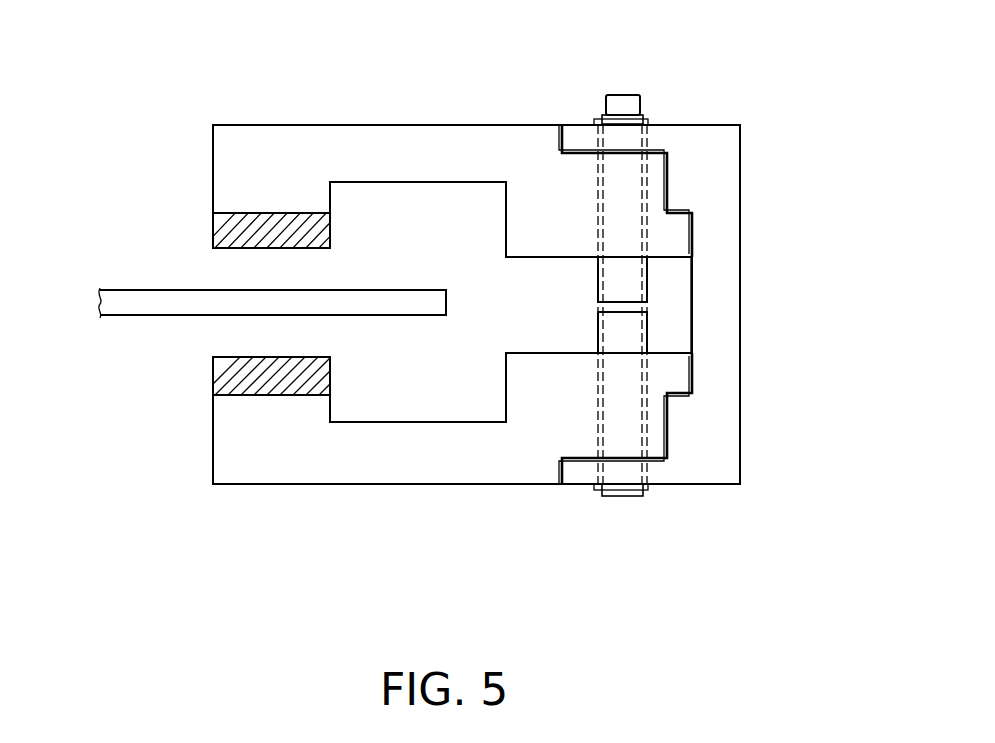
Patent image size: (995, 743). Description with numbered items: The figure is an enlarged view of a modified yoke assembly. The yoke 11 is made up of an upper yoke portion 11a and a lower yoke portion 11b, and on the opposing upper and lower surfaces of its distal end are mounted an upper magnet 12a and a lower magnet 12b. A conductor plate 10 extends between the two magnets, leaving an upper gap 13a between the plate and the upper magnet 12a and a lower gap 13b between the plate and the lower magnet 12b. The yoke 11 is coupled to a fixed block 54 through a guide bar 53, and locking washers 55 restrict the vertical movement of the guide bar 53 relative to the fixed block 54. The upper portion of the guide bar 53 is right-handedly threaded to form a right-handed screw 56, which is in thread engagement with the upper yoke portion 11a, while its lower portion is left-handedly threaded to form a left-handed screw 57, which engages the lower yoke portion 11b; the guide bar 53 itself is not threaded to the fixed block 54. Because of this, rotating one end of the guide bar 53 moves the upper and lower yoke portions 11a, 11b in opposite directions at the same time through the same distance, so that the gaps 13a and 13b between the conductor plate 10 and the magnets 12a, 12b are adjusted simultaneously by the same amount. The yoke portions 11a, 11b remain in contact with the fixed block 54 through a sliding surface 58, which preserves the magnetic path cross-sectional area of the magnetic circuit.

The conductor plate 10 is at (133, 290).
The yoke 11 is at (266, 117).
The upper yoke portion 11a is at (408, 128).
The lower yoke portion 11b is at (405, 483).
The upper magnet 12a is at (218, 236).
The lower magnet 12b is at (222, 374).
The upper gap 13a is at (288, 264).
The lower gap 13b is at (290, 337).
The guide bar 53 is at (612, 97).
The fixed block 54 is at (725, 320).
The locking washers 55 is at (646, 120).
The right-handed screw 56 is at (609, 283).
The left-handed screw 57 is at (609, 329).
The sliding surface 58 is at (667, 180).